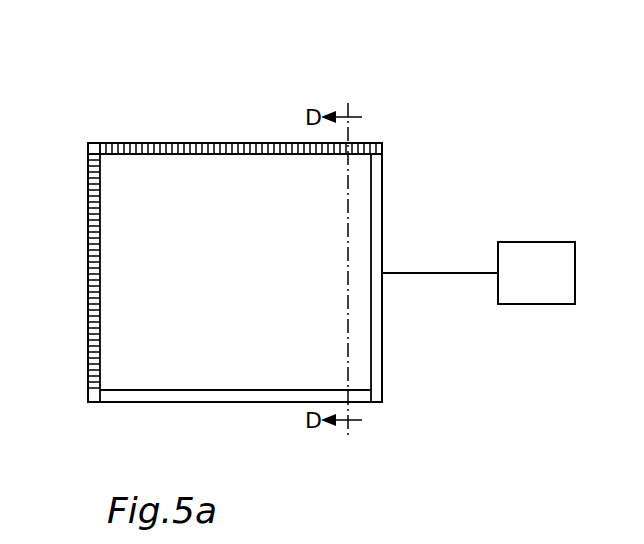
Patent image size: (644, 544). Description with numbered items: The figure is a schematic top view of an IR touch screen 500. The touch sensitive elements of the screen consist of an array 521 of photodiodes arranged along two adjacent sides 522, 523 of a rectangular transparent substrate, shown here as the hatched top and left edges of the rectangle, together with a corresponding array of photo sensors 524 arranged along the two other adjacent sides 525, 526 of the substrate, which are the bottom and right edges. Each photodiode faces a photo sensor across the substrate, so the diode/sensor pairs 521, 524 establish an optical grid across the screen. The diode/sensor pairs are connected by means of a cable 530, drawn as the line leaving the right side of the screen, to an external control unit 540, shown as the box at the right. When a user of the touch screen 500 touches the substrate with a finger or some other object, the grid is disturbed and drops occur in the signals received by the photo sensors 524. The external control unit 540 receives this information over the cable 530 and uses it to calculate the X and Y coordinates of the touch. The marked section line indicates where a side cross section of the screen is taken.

The IR touch screen 500 is at (401, 79).
The array of photodiodes 521 is at (110, 143).
The side of substrate 522 is at (219, 133).
The side of substrate 523 is at (80, 322).
The array of photo sensors 524 is at (376, 341).
The side of substrate 525 is at (163, 410).
The side of substrate 526 is at (393, 195).
The cable 530 is at (426, 270).
The external control unit 540 is at (532, 254).